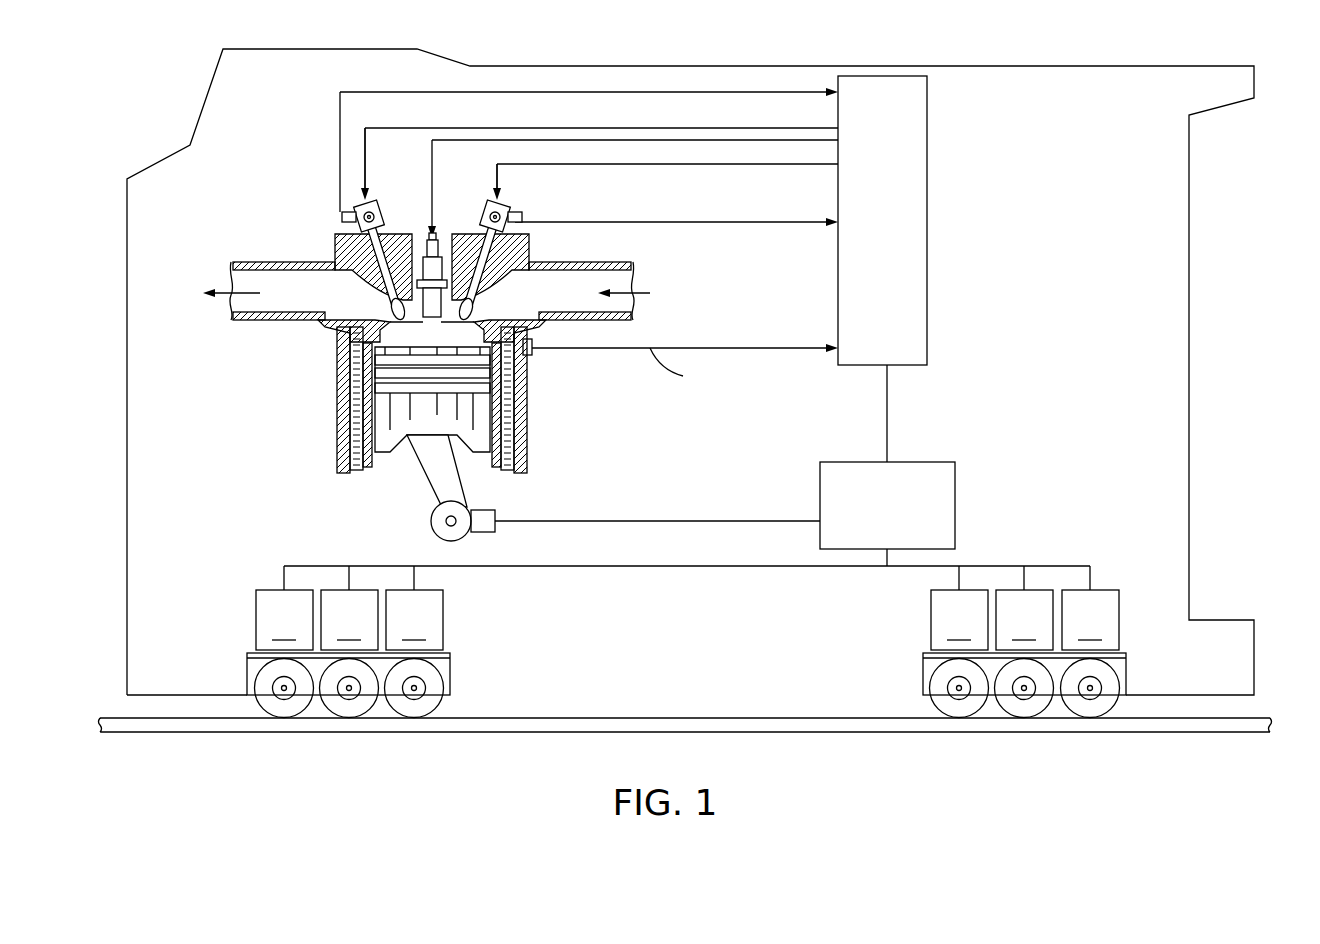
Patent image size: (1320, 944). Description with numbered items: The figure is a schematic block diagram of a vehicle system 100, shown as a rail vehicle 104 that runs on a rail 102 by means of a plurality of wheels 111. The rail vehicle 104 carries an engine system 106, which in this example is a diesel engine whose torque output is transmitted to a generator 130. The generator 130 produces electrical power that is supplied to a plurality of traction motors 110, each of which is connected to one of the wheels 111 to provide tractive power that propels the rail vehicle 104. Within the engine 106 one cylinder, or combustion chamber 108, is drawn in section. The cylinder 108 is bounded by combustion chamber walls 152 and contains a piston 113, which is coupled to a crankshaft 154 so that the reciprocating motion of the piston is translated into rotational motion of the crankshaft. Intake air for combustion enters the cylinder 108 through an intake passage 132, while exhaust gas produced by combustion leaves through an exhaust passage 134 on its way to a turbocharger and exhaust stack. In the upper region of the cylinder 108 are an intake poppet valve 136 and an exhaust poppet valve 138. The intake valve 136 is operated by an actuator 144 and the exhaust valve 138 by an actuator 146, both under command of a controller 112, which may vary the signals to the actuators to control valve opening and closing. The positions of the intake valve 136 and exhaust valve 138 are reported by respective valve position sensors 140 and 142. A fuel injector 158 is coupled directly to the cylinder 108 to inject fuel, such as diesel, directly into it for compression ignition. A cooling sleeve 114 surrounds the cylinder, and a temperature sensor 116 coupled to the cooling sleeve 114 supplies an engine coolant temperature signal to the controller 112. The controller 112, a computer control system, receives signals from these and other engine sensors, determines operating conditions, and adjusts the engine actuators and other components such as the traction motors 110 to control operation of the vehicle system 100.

The vehicle system 100 is at (665, 363).
The rail 102 is at (1188, 736).
The rail vehicle 104 is at (960, 65).
The engine system 106 is at (518, 314).
The cylinder 108 is at (415, 340).
The traction motors 110 is at (687, 608).
The wheels 111 is at (436, 680).
The controller 112 is at (866, 230).
The piston 113 is at (415, 423).
The cooling sleeve 114 is at (507, 424).
The temperature sensor 116 is at (533, 356).
The generator 130 is at (871, 527).
The intake passage 132 is at (536, 302).
The exhaust passage 134 is at (303, 302).
The intake poppet valve 136 is at (473, 305).
The exhaust poppet valve 138 is at (392, 303).
The valve position sensor 140 is at (509, 217).
The valve position sensor 142 is at (352, 216).
The actuator 144 is at (488, 202).
The actuator 146 is at (374, 202).
The combustion chamber walls 152 is at (378, 462).
The crankshaft 154 is at (478, 511).
The fuel injector 158 is at (447, 243).